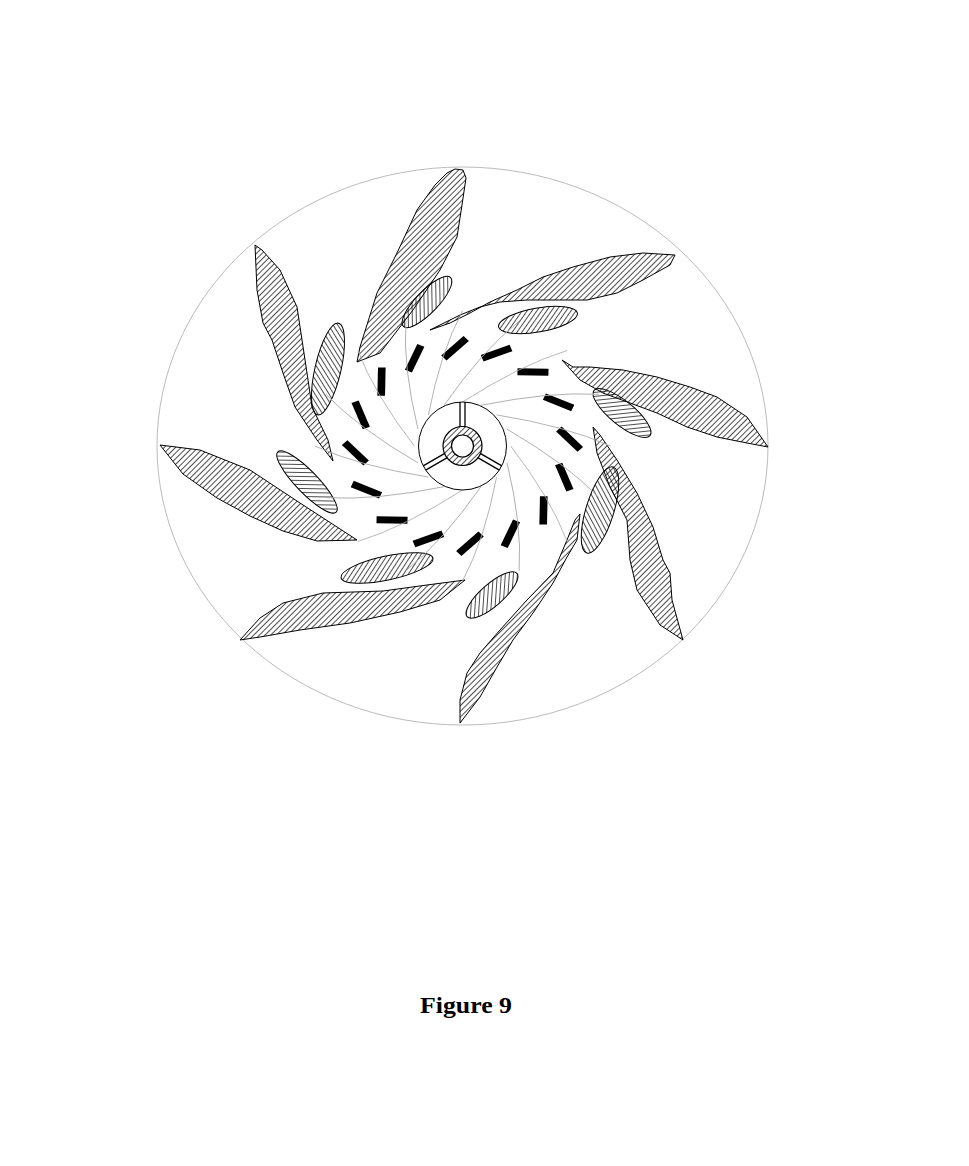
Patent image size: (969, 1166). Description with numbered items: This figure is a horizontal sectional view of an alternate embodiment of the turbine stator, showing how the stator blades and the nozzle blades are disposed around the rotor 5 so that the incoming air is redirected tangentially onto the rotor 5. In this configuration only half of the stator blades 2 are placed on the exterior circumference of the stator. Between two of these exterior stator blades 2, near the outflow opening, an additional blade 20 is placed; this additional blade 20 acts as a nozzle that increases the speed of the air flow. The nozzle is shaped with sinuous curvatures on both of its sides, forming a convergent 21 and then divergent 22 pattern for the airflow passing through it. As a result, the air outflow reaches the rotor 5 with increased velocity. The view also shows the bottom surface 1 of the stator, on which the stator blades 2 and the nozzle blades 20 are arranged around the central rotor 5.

The bottom surface 1 is at (718, 515).
The stator blades 2 is at (637, 590).
The rotor 5 is at (357, 540).
The additional blade 20 is at (290, 452).
The convergent pattern 21 is at (600, 310).
The divergent pattern 22 is at (505, 317).